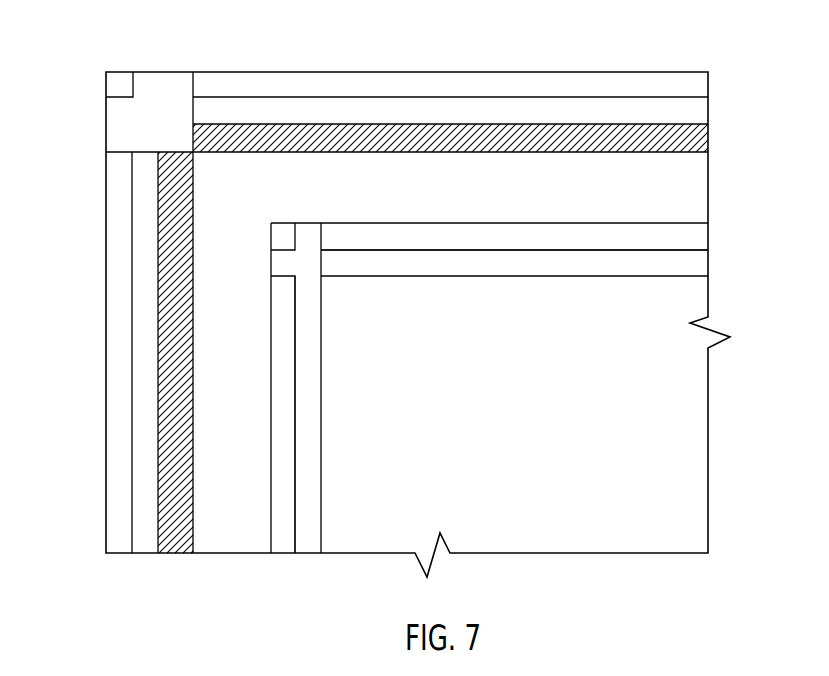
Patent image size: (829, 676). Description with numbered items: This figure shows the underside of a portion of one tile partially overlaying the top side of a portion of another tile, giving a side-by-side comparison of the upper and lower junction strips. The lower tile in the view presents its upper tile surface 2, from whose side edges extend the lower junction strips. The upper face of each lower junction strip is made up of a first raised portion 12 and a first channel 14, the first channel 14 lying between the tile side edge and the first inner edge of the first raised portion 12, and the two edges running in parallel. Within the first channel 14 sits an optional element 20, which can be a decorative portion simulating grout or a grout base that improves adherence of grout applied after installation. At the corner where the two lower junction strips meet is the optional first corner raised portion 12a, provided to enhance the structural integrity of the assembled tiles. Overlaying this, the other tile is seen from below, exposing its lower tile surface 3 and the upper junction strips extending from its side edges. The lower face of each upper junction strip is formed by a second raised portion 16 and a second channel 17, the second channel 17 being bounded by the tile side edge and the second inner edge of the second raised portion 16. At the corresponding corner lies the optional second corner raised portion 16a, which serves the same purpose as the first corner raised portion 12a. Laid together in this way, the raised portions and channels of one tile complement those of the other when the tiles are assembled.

The upper tile surface 2 is at (234, 207).
The lower tile surface 3 is at (495, 393).
The first raised portion 12 is at (440, 72).
The first corner raised portion 12a is at (112, 72).
The first channel 14 is at (716, 98).
The second raised portion 16 is at (540, 223).
The second corner raised portion 16a is at (283, 231).
The second channel 17 is at (707, 258).
The optional element 20 is at (618, 124).